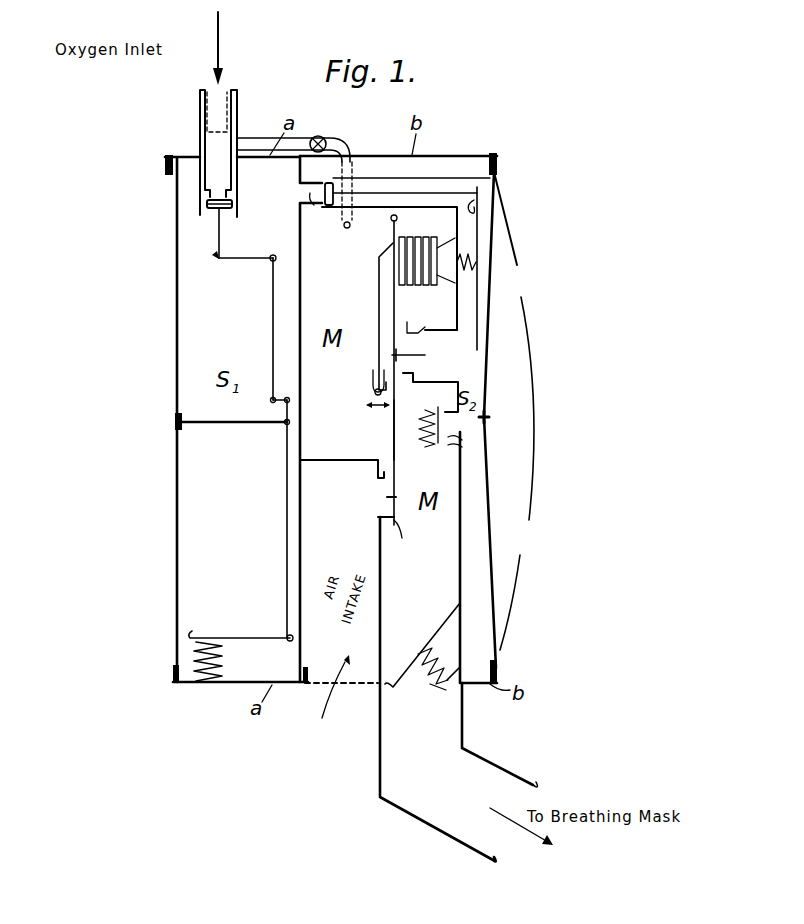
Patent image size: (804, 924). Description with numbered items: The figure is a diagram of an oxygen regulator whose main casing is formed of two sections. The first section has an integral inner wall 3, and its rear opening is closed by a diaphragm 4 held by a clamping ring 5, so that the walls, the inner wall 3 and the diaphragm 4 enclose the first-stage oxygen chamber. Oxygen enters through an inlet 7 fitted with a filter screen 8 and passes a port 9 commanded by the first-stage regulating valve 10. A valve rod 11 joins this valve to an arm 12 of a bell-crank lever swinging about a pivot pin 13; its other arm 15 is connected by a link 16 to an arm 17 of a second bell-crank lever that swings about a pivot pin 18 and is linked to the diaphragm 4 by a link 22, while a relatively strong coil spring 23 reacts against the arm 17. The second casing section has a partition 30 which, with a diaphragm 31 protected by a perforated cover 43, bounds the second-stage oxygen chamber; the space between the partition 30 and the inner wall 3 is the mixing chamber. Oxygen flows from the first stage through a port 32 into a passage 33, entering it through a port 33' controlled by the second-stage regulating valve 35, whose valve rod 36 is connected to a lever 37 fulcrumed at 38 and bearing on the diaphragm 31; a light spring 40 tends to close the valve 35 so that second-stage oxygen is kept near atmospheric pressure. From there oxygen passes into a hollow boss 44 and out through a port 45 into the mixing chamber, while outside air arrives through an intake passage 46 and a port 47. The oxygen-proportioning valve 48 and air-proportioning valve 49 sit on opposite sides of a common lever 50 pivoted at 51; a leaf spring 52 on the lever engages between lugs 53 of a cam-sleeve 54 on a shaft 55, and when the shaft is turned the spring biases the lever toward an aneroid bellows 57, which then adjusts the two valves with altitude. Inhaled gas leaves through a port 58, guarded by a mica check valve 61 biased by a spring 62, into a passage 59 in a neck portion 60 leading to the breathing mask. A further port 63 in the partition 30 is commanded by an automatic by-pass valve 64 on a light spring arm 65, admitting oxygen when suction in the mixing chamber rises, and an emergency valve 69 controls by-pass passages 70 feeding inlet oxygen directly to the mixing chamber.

The inner wall 3 is at (305, 314).
The diaphragm 4 is at (176, 585).
The clamping ring 5 is at (172, 678).
The inlet 7 is at (200, 140).
The filter screen 8 is at (235, 115).
The port 9 is at (215, 193).
The first-stage regulating valve 10 is at (213, 210).
The valve rod 11 is at (223, 238).
The arm of bell-crank lever 12 is at (252, 259).
The pivot pin 13 is at (274, 254).
The arm of bell-crank lever 15 is at (272, 338).
The link 16 is at (285, 395).
The arm of second bell-crank lever 17 is at (287, 518).
The pivot pin 18 is at (288, 633).
The link 22 is at (265, 425).
The coil spring 23 is at (250, 668).
The partition 30 is at (460, 546).
The diaphragm 31 is at (486, 485).
The port 32 is at (298, 194).
The passage 33 is at (405, 155).
The port 33' is at (318, 219).
The second-stage regulating valve 35 is at (333, 183).
The valve rod 36 is at (473, 192).
The lever 37 is at (480, 245).
The fulcrum 38 is at (476, 206).
The spring 40 is at (473, 290).
The perforated cover 43 is at (538, 358).
The hollow boss 44 is at (428, 336).
The port 45 is at (433, 328).
The intake passage 46 is at (400, 689).
The port 47 is at (385, 494).
The oxygen-proportioning valve 48 is at (420, 358).
The air-proportioning valve 49 is at (398, 540).
The lever 50 is at (393, 432).
The pivot 51 is at (386, 226).
The leaf spring 52 is at (377, 305).
The lugs 53 is at (374, 368).
The cam-sleeve 54 is at (372, 391).
The shaft 55 is at (362, 406).
The aneroid bellows 57 is at (418, 237).
The port 58 is at (438, 631).
The passage 59 is at (440, 735).
The neck portion 60 is at (515, 778).
The check valve 61 is at (412, 672).
The spring 62 is at (443, 673).
The port 63 is at (462, 444).
The by-pass valve 64 is at (452, 441).
The spring arm 65 is at (428, 448).
The valve 69 is at (323, 136).
The by-pass passages 70 is at (257, 138).